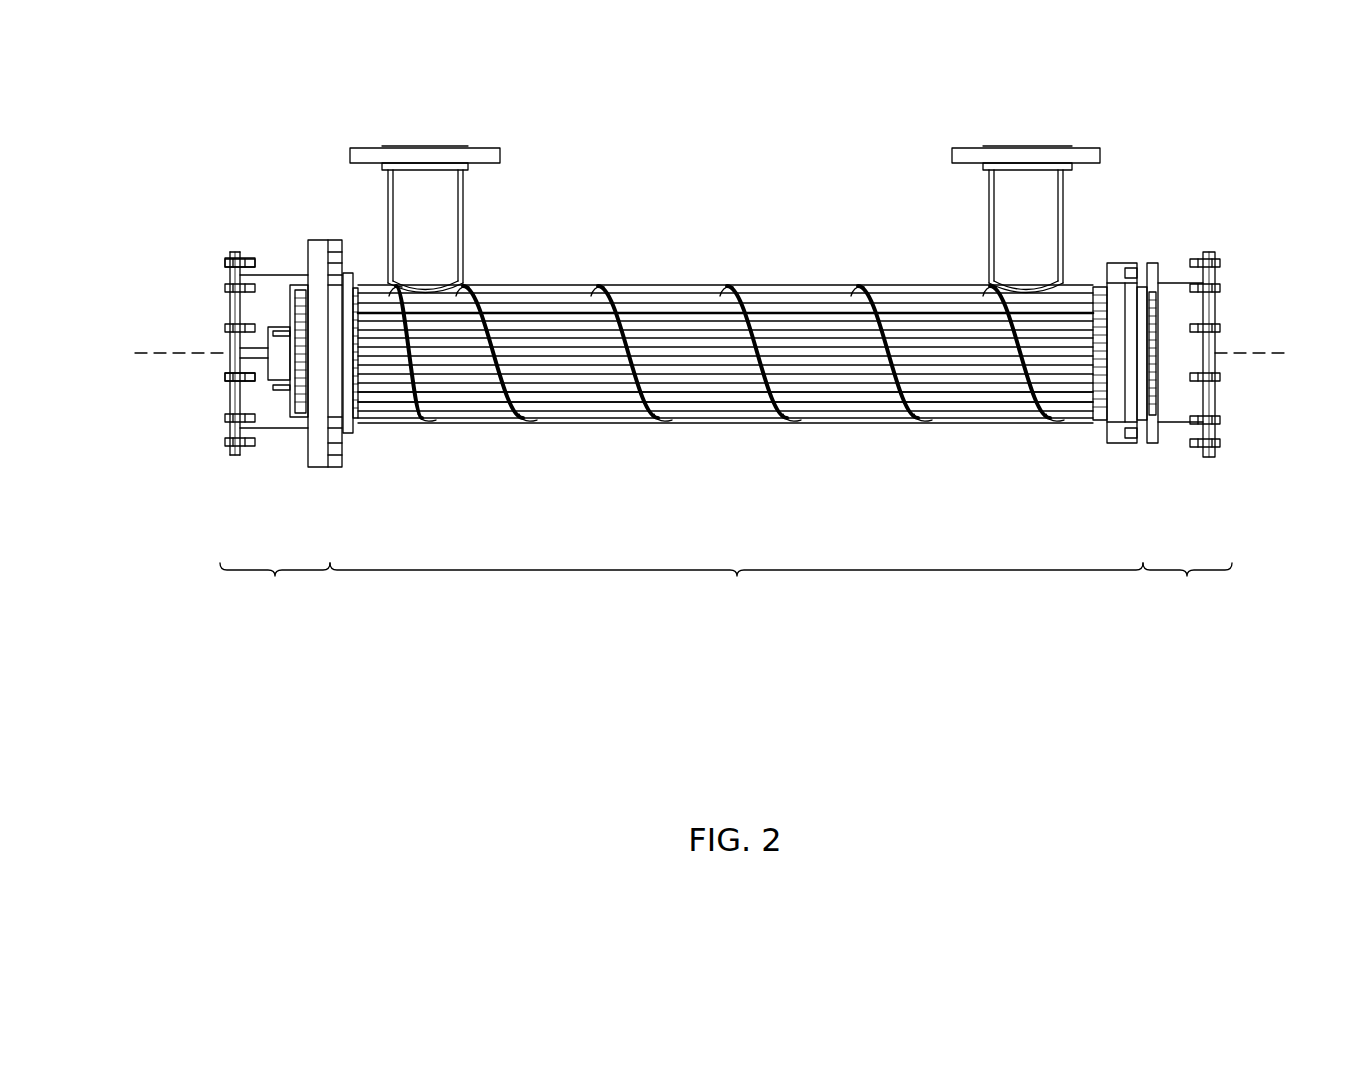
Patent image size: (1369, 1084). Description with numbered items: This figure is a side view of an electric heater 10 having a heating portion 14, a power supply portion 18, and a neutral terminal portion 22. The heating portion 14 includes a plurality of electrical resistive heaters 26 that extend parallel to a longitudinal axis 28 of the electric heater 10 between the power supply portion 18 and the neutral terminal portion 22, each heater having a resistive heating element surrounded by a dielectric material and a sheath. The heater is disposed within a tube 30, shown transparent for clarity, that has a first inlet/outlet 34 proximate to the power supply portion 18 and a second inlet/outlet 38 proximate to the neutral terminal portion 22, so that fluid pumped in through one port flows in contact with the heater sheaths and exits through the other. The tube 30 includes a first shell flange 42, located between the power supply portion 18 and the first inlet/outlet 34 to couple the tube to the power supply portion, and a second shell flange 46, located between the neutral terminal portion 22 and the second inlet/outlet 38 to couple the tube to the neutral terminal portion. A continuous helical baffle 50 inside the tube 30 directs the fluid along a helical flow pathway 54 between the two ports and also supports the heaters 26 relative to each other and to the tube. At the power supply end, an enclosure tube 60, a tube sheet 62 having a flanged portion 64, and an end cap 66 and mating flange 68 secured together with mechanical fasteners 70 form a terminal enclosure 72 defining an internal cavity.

The electric heater 10 is at (503, 638).
The heating portion 14 is at (736, 588).
The power supply portion 18 is at (275, 586).
The neutral terminal portion 22 is at (1187, 588).
The electrical resistive heater 26 is at (837, 405).
The longitudinal axis 28 is at (170, 353).
The tube 30 is at (499, 423).
The first inlet/outlet 34 is at (458, 237).
The second inlet/outlet 38 is at (992, 247).
The first shell flange 42 is at (343, 460).
The second shell flange 46 is at (1122, 447).
The baffle 50 is at (727, 287).
The helical flow pathway 54 is at (687, 393).
The enclosure tube 60 is at (277, 293).
The tube sheet 62 is at (323, 240).
The flanged portion 64 is at (317, 467).
The end cap 66 is at (232, 302).
The mating flange 68 is at (230, 250).
The mechanical fastener 70 is at (220, 327).
The terminal enclosure 72 is at (253, 392).